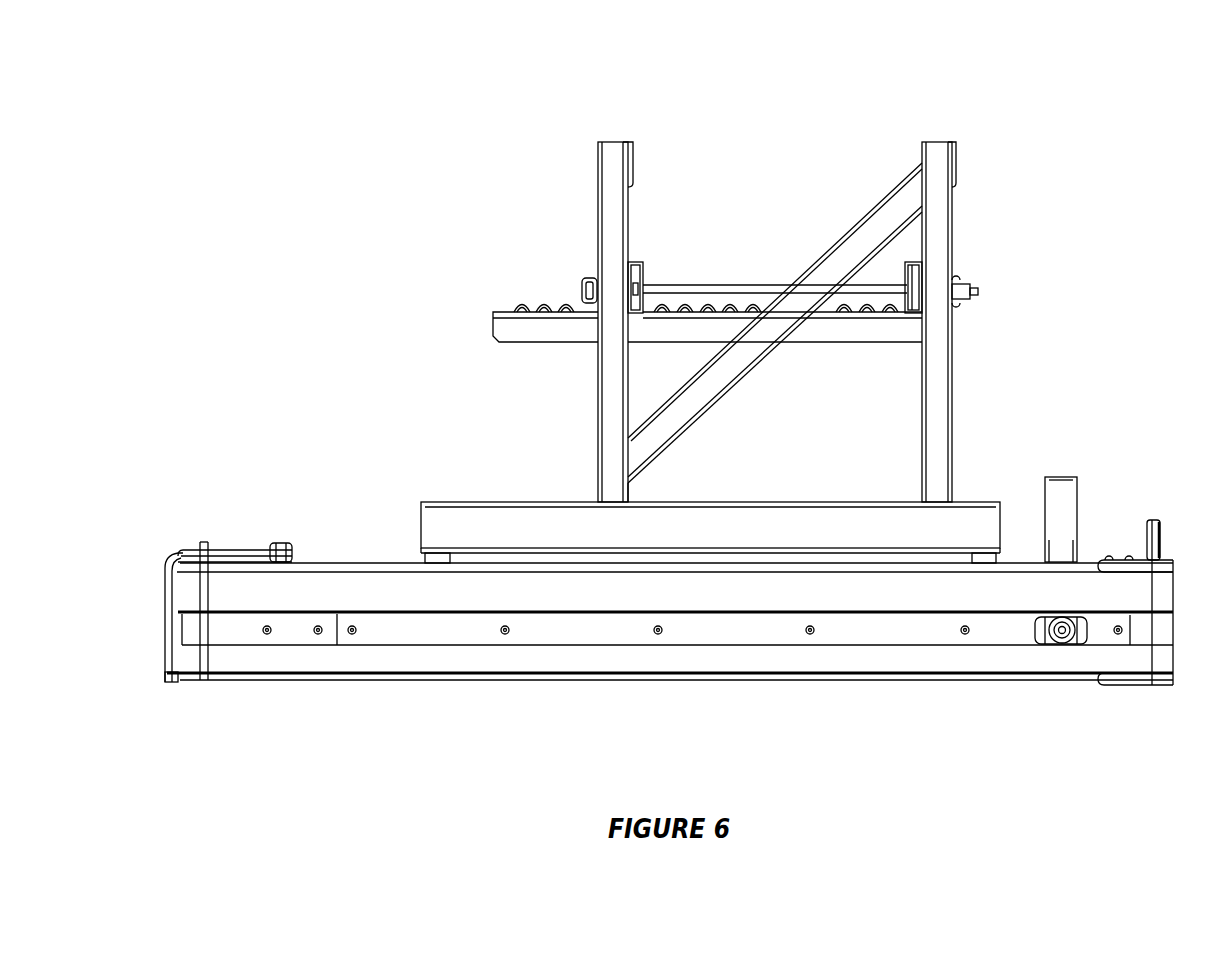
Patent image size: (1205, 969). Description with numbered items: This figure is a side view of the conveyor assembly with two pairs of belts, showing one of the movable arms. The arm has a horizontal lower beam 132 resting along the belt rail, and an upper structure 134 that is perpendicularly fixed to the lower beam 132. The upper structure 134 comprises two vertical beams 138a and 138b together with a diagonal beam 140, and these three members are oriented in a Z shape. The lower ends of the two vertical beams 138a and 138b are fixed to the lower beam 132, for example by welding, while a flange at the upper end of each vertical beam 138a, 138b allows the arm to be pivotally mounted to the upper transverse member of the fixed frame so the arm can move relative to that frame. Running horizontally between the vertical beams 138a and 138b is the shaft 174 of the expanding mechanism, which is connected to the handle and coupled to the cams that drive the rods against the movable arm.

The lower beam 132 is at (447, 528).
The upper structure 134 is at (587, 231).
The vertical beam 138a is at (611, 165).
The vertical beam 138b is at (943, 160).
The diagonal beam 140 is at (810, 302).
The shaft 174 is at (698, 286).